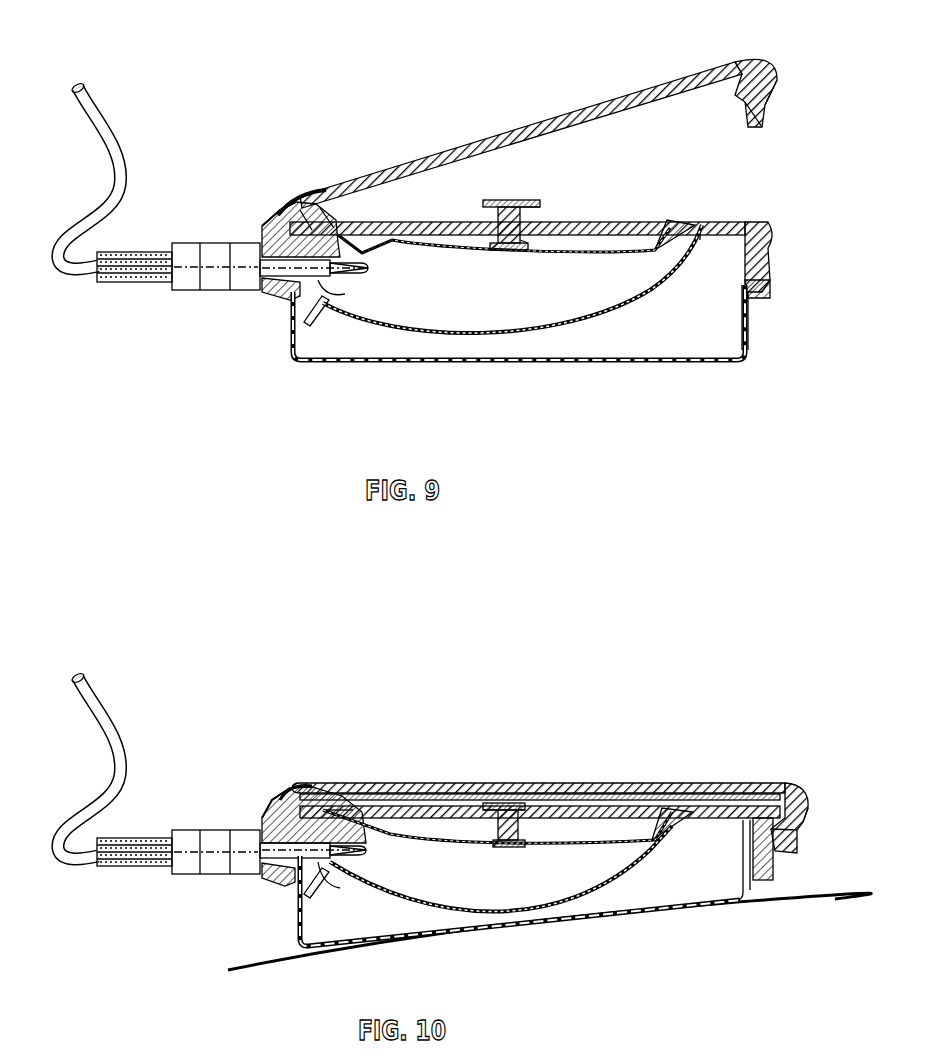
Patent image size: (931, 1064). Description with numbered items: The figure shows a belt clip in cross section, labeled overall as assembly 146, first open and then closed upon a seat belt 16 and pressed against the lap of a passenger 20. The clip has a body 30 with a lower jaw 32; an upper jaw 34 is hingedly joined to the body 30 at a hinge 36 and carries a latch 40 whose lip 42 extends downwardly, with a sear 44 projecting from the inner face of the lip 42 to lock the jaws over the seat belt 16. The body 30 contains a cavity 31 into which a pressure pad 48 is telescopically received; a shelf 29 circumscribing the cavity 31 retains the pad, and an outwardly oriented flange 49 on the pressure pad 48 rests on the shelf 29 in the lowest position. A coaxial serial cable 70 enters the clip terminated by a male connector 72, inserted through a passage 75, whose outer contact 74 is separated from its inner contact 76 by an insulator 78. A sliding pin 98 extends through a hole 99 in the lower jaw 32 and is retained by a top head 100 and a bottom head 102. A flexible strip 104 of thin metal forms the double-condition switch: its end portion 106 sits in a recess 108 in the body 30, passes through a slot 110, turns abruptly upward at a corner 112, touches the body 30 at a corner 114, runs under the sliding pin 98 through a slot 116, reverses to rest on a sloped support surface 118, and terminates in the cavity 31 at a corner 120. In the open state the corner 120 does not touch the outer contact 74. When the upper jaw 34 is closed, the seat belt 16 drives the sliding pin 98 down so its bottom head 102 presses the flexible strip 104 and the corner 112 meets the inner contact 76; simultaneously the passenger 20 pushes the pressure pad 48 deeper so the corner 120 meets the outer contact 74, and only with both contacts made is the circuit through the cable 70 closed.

In FIG. 10, the seat belt 16 is at (580, 793).
In FIG. 10, the passenger 20 is at (790, 913).
In FIG. 9, the shelf 29 is at (750, 290).
In FIG. 10, the shelf 29 is at (758, 879).
In FIG. 9, the body 30 is at (280, 204).
In FIG. 10, the body 30 is at (290, 795).
In FIG. 9, the cavity 31 is at (747, 245).
In FIG. 9, the lower jaw 32 is at (590, 221).
In FIG. 10, the lower jaw 32 is at (737, 822).
In FIG. 9, the upper jaw 34 is at (562, 113).
In FIG. 10, the upper jaw 34 is at (502, 783).
In FIG. 9, the hinge 36 is at (272, 222).
In FIG. 10, the hinge 36 is at (272, 805).
In FIG. 9, the latch 40 is at (777, 76).
In FIG. 10, the latch 40 is at (792, 812).
In FIG. 9, the lip 42 is at (747, 65).
In FIG. 10, the lip 42 is at (784, 790).
In FIG. 9, the sear 44 is at (734, 98).
In FIG. 10, the sear 44 is at (774, 828).
In FIG. 9, the pressure pad 48 is at (413, 363).
In FIG. 10, the pressure pad 48 is at (473, 933).
In FIG. 9, the flange 49 is at (752, 292).
In FIG. 9, the coaxial serial cable 70 is at (100, 195).
In FIG. 10, the coaxial serial cable 70 is at (100, 785).
In FIG. 9, the male connector 72 is at (190, 248).
In FIG. 10, the male connector 72 is at (210, 838).
In FIG. 9, the outer contact 74 is at (262, 243).
In FIG. 10, the outer contact 74 is at (262, 847).
In FIG. 9, the passage 75 is at (270, 280).
In FIG. 10, the passage 75 is at (270, 868).
In FIG. 9, the inner contact 76 is at (357, 271).
In FIG. 10, the inner contact 76 is at (352, 856).
In FIG. 9, the insulator 78 is at (332, 276).
In FIG. 10, the insulator 78 is at (324, 864).
In FIG. 9, the sliding pin 98 is at (535, 205).
In FIG. 10, the sliding pin 98 is at (520, 826).
In FIG. 9, the hole 99 is at (528, 238).
In FIG. 10, the hole 99 is at (488, 814).
In FIG. 9, the top head 100 is at (507, 200).
In FIG. 10, the top head 100 is at (497, 806).
In FIG. 9, the bottom head 102 is at (503, 242).
In FIG. 10, the bottom head 102 is at (507, 842).
In FIG. 9, the flexible strip 104 is at (600, 318).
In FIG. 10, the flexible strip 104 is at (606, 910).
In FIG. 9, the end portion 106 is at (334, 228).
In FIG. 9, the recess 108 is at (312, 230).
In FIG. 9, the slot 110 is at (347, 228).
In FIG. 9, the corner 112 is at (370, 248).
In FIG. 10, the corner 112 is at (353, 810).
In FIG. 9, the corner 114 is at (387, 247).
In FIG. 10, the corner 114 is at (390, 830).
In FIG. 9, the slot 116 is at (665, 224).
In FIG. 9, the sloped support surface 118 is at (700, 232).
In FIG. 10, the sloped support surface 118 is at (697, 828).
In FIG. 9, the corner 120 is at (304, 322).
In FIG. 10, the corner 120 is at (304, 940).
In FIG. 9, the assembly 146 is at (760, 204).
In FIG. 10, the assembly 146 is at (730, 744).